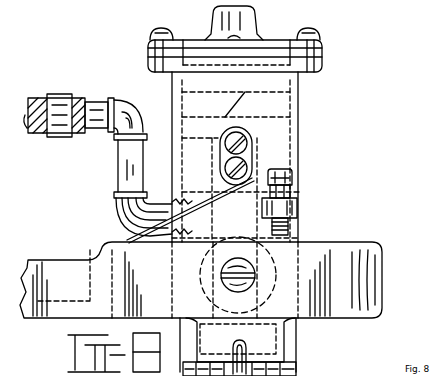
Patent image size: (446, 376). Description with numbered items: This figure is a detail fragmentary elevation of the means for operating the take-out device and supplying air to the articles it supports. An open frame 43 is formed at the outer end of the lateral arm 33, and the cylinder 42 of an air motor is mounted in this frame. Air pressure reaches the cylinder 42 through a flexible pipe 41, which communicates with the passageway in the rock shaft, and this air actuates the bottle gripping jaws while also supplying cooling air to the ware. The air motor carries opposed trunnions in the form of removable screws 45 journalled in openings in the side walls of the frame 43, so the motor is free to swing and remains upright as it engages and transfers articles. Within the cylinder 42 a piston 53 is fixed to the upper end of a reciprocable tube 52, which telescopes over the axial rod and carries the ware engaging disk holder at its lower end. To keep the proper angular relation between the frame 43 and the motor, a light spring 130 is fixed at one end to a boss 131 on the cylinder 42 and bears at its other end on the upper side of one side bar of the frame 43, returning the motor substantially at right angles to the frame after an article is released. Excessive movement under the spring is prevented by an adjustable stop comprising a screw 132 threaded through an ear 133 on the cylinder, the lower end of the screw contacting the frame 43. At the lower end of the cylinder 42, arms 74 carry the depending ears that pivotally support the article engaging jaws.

The lateral arm 33 is at (62, 318).
The flexible pipe 41 is at (42, 130).
The cylinder 42 is at (298, 193).
The open frame 43 is at (344, 246).
The removable screws 45 is at (221, 272).
The reciprocable tube 52 is at (294, 173).
The piston 53 is at (300, 127).
The arms 74 is at (288, 346).
The light spring 130 is at (130, 236).
The boss 131 is at (222, 131).
The screw 132 is at (290, 229).
The ear 133 is at (298, 211).